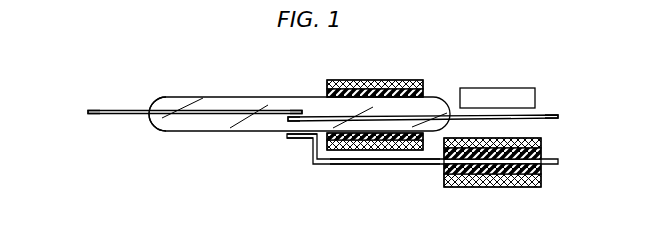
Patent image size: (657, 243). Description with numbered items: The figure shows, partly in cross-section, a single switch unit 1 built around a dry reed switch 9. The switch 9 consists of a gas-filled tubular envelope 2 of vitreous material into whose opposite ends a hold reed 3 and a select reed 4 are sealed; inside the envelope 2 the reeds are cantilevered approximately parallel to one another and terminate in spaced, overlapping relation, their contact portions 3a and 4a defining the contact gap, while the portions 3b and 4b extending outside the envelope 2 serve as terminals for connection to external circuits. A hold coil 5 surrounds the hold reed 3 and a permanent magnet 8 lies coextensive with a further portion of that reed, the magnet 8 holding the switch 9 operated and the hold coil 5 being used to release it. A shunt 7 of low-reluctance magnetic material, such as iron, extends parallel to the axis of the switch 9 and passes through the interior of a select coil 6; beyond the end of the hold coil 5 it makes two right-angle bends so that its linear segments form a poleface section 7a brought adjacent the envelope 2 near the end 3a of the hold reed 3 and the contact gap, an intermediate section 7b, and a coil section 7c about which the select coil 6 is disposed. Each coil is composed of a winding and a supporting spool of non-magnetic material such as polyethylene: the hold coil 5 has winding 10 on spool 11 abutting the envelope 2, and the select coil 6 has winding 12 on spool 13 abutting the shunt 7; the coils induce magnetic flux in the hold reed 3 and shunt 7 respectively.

The switch unit 1 is at (325, 91).
The envelope 2 is at (219, 97).
The hold reed 3 is at (448, 115).
The contact portion of hold reed 3a is at (290, 122).
The terminal portion of hold reed 3b is at (558, 116).
The select reed 4 is at (196, 118).
The contact portion of select reed 4a is at (297, 109).
The terminal portion of select reed 4b is at (88, 111).
The hold coil 5 is at (361, 80).
The select coil 6 is at (505, 139).
The shunt 7 is at (341, 164).
The poleface section 7a is at (295, 139).
The intermediate section 7b is at (393, 164).
The coil section 7c is at (498, 167).
The permanent magnet 8 is at (497, 90).
The dry reed switch 9 is at (176, 97).
The winding of hold coil 10 is at (394, 86).
The spool of hold coil 11 is at (427, 94).
The winding of select coil 12 is at (487, 180).
The spool of select coil 13 is at (541, 177).